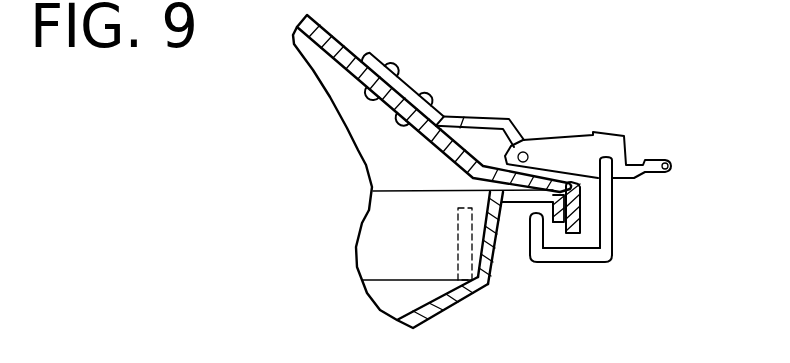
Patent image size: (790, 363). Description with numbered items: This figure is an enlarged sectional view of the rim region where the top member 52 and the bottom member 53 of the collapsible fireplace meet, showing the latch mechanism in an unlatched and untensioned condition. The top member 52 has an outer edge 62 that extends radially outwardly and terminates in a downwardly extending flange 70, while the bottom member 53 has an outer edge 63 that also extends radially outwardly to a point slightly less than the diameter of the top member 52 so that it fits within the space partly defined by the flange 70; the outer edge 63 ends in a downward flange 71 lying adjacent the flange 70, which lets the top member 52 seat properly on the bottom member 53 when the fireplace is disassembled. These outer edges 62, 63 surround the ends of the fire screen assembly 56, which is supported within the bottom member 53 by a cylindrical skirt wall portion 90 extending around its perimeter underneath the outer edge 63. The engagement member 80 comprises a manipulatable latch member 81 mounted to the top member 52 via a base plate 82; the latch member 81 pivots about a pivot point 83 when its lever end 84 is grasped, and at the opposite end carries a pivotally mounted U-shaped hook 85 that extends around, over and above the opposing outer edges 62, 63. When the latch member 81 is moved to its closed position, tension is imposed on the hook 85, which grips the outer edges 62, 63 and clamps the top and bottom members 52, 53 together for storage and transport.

The top member 52 is at (333, 33).
The bottom member 53 is at (433, 320).
The fire screen assembly 56 is at (484, 289).
The top member outer edge 62 is at (571, 184).
The bottom member outer edge 63 is at (520, 206).
The downwardly extending flange 70 is at (578, 213).
The downward flange 71 is at (554, 225).
The engagement member 80 is at (467, 100).
The latch member 81 is at (569, 156).
The base plate 82 is at (378, 62).
The pivot point 83 is at (526, 152).
The lever end 84 is at (668, 162).
The U-shaped hook 85 is at (603, 258).
The cylindrical skirt wall portion 90 is at (477, 232).